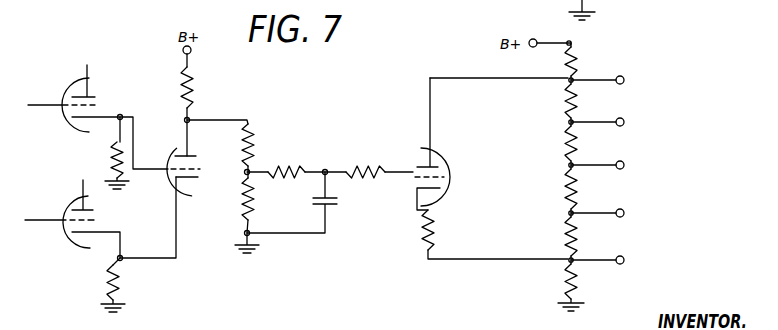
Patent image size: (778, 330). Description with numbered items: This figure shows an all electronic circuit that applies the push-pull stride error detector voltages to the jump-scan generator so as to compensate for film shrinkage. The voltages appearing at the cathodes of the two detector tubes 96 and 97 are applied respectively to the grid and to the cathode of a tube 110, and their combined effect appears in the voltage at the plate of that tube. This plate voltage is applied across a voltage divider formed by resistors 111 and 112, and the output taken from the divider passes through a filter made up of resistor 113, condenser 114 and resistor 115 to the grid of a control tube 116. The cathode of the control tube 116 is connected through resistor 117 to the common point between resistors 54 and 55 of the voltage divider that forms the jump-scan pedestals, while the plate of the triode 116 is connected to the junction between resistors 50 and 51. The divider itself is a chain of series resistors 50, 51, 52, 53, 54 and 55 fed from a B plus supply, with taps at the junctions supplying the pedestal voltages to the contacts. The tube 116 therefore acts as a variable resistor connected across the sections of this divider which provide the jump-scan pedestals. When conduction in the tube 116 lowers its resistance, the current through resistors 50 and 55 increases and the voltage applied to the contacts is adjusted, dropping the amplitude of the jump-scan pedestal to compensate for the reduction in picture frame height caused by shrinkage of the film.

The resistor 50 is at (566, 60).
The resistor 51 is at (566, 100).
The resistor 52 is at (566, 143).
The resistor 53 is at (566, 186).
The resistor 54 is at (566, 237).
The resistor 55 is at (566, 281).
The tube 96 is at (76, 80).
The tube 97 is at (68, 196).
The tube 110 is at (174, 155).
The resistor 111 is at (256, 140).
The resistor 112 is at (258, 185).
The resistor 113 is at (288, 164).
The condenser 114 is at (333, 209).
The resistor 115 is at (356, 165).
The control tube 116 is at (428, 156).
The resistor 117 is at (440, 215).